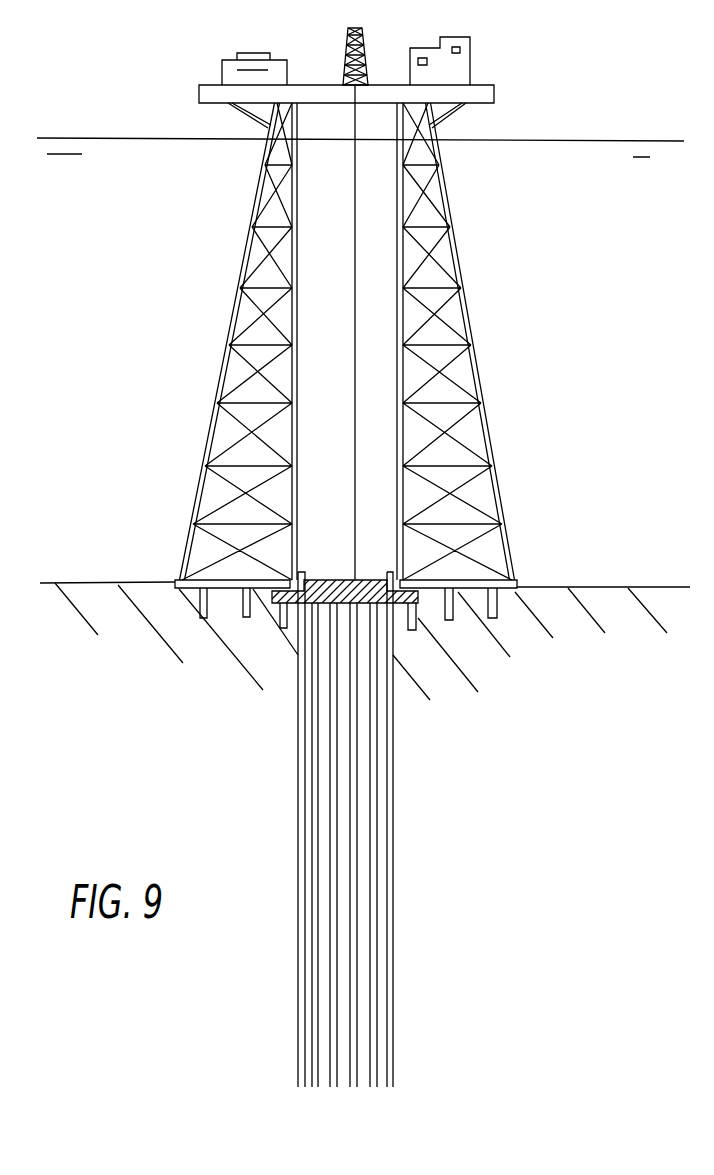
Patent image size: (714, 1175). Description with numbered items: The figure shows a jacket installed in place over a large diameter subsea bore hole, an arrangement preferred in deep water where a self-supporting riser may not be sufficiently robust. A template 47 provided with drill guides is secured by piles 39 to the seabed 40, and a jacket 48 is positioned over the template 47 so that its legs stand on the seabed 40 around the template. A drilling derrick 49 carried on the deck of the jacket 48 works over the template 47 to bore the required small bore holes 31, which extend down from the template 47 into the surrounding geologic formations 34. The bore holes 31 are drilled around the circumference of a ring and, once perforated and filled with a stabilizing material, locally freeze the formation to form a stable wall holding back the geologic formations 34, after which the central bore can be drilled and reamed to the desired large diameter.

The drilling derrick 49 is at (365, 40).
The jacket 48 is at (497, 97).
The template 47 is at (333, 577).
The seabed 40 is at (585, 586).
The piles 39 is at (495, 610).
The geologic formations 34 is at (361, 700).
The small bore holes 31 is at (393, 975).